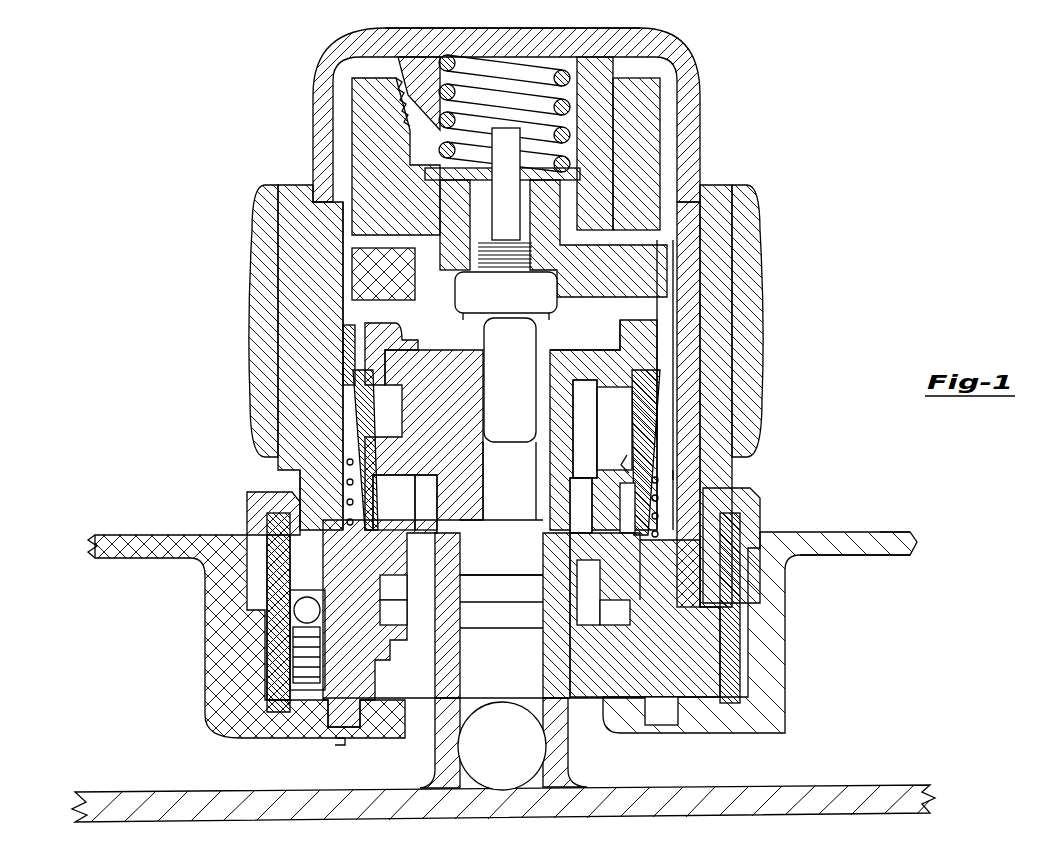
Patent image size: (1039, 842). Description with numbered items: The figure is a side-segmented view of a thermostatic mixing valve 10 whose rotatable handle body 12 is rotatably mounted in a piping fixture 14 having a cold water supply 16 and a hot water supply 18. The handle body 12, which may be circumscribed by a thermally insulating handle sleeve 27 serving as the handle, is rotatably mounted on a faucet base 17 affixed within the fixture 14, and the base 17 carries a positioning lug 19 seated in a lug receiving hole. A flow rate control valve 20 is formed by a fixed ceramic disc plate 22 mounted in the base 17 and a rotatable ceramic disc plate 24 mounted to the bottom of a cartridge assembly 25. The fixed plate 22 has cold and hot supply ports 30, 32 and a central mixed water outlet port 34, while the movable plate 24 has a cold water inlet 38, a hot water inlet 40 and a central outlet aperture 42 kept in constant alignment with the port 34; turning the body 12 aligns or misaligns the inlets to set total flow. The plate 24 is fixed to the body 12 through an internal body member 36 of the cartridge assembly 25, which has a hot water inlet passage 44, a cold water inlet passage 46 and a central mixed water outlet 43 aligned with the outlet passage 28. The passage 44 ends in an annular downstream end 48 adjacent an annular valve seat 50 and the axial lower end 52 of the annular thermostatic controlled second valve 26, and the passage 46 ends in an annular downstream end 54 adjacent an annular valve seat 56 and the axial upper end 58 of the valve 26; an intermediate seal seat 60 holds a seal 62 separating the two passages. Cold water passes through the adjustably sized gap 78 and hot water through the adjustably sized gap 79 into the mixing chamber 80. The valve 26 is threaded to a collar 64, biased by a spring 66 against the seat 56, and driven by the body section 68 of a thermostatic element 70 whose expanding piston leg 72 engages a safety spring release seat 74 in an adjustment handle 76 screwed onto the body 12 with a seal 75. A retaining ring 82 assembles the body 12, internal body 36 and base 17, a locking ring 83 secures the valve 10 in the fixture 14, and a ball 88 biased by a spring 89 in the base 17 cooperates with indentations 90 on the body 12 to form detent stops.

The thermostatic mixing valve 10 is at (745, 136).
The rotatable body 12 is at (712, 398).
The piping fixture 14 is at (906, 530).
The cold water supply 16 is at (861, 693).
The faucet base 17 is at (712, 640).
The hot water supply 18 is at (137, 673).
The positioning lug 19 is at (341, 740).
The flow rate control valve 20 is at (650, 616).
The fixed ceramic disc plate 22 is at (428, 540).
The rotatable ceramic disc plate 24 is at (380, 623).
The cartridge assembly 25 is at (676, 275).
The thermostatic controlled second valve 26 is at (336, 472).
The thermally insulating handle sleeve 27 is at (735, 352).
The outlet passage 28 is at (512, 757).
The cold supply port 30 is at (594, 618).
The hot supply port 32 is at (431, 618).
The mixed water outlet port 34 is at (499, 618).
The internal body member 36 is at (466, 490).
The cold water inlet 38 is at (594, 594).
The hot water inlet 40 is at (431, 594).
The outlet aperture 42 is at (529, 595).
The central mixed water outlet 43 is at (514, 558).
The hot water inlet passage 44 is at (435, 520).
The cold water inlet passage 46 is at (624, 418).
The annular shaped downstream end 48 is at (401, 520).
The annular valve seat 50 is at (315, 508).
The axial lower end 52 is at (660, 524).
The annular shaped downstream end 54 is at (588, 516).
The annular valve seat 56 is at (596, 358).
The axial upper end 58 is at (660, 410).
The intermediate seal seat 60 is at (625, 472).
The seal 62 is at (627, 455).
The collar 64 is at (362, 348).
The spring 66 is at (455, 460).
The body section 68 is at (512, 421).
The thermostatic element 70 is at (550, 300).
The expanding piston leg 72 is at (501, 150).
The safety spring release seat 74 is at (506, 110).
The seal 75 is at (536, 229).
The adjustment handle 76 is at (318, 132).
The adjustably sized gap 78 is at (345, 392).
The adjustably sized gap 79 is at (702, 476).
The mixing chamber 80 is at (441, 306).
The retaining ring 82 is at (300, 618).
The locking ring 83 is at (745, 495).
The ball 88 is at (282, 640).
The spring 89 is at (270, 684).
The indentations 90 is at (290, 536).